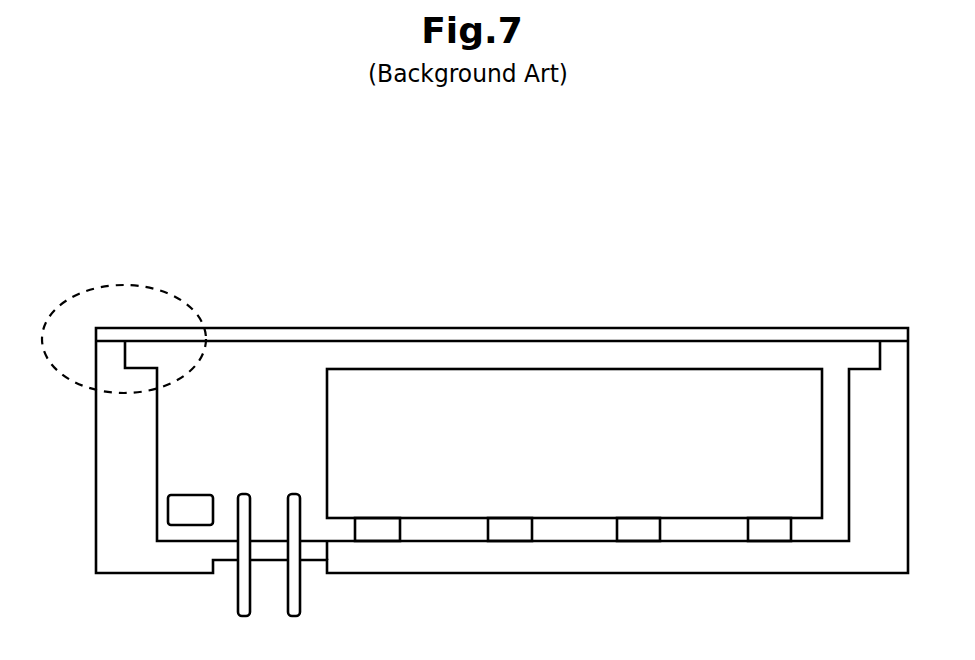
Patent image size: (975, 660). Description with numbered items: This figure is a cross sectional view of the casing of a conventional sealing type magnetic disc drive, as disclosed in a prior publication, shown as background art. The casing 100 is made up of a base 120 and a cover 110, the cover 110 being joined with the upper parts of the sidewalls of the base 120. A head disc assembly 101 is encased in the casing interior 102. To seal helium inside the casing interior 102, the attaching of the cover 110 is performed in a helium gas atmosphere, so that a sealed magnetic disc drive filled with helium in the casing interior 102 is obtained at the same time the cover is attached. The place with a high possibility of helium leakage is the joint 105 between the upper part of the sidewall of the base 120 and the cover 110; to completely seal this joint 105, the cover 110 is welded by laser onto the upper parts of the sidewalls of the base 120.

The casing 100 is at (567, 263).
The head disc assembly (HDA) 101 is at (327, 440).
The casing interior 102 is at (741, 351).
The joint 105 is at (110, 288).
The cover 110 is at (435, 328).
The base 120 is at (575, 573).